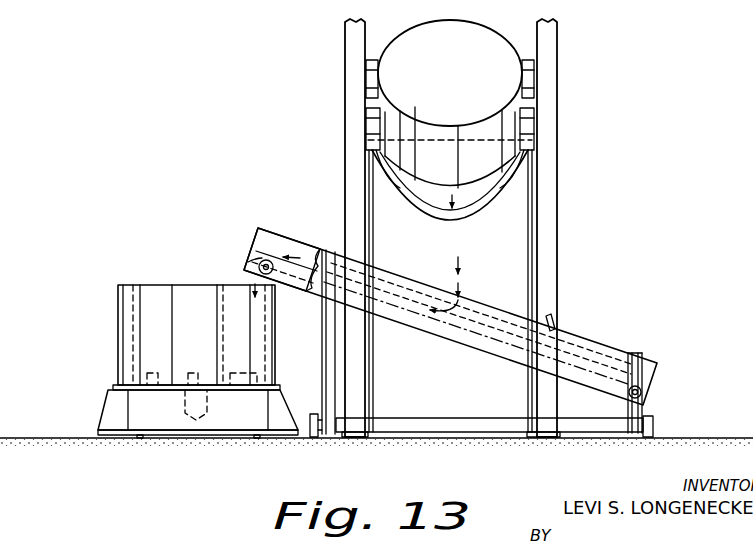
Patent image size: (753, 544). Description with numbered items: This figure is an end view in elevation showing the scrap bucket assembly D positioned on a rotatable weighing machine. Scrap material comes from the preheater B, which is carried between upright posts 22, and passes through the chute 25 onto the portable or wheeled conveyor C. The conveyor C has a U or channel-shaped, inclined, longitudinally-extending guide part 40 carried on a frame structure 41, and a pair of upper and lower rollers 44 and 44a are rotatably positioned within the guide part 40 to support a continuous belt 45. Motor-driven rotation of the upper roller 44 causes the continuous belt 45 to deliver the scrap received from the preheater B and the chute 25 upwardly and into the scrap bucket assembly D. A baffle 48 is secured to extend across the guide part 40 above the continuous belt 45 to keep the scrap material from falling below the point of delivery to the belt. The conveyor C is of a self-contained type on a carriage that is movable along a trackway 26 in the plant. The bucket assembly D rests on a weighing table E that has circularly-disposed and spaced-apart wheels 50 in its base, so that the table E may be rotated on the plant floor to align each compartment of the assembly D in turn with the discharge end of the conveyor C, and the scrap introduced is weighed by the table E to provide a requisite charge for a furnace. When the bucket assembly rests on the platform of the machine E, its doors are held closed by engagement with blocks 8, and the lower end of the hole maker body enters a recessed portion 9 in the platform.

The upright posts 22 is at (344, 122).
The chute 25 is at (530, 246).
The guide part 40 is at (263, 250).
The upper roller 44 is at (262, 260).
The lower roller 44a is at (641, 390).
The continuous belt 45 is at (588, 368).
The baffle 48 is at (549, 318).
The frame structure 41 is at (338, 387).
The trackway 26 is at (656, 438).
The blocks 8 is at (150, 372).
The recessed portion 9 is at (182, 422).
The wheels 50 is at (138, 438).
The preheater B is at (459, 87).
The portable or wheeled conveyor C is at (452, 316).
The scrap bucket assembly D is at (178, 340).
The weighing table E is at (190, 427).